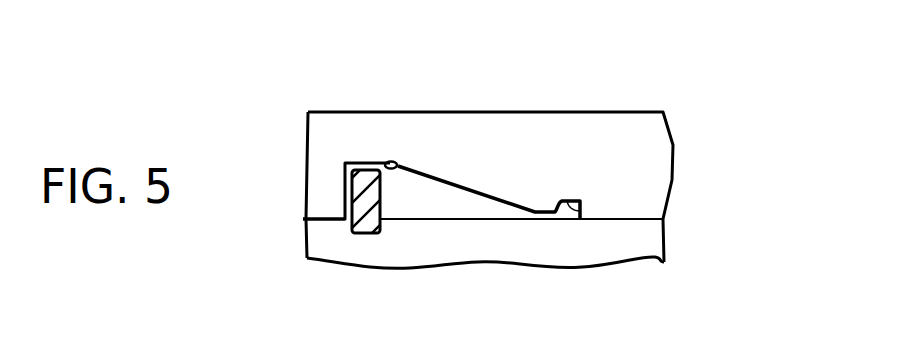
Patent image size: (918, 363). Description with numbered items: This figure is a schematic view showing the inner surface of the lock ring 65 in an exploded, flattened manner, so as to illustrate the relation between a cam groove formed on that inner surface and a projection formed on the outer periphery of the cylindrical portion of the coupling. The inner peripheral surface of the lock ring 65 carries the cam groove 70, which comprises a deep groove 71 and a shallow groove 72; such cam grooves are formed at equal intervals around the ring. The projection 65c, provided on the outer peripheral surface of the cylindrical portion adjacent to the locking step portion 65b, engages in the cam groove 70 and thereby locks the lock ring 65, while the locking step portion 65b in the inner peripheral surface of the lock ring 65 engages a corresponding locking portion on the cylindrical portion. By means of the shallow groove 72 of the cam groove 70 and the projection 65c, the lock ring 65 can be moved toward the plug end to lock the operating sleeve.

The lock ring 65 is at (640, 157).
The locking step portion 65b is at (317, 219).
The projection 65c is at (363, 166).
The cam groove 70 is at (482, 198).
The deep groove 71 is at (400, 162).
The shallow groove 72 is at (580, 211).